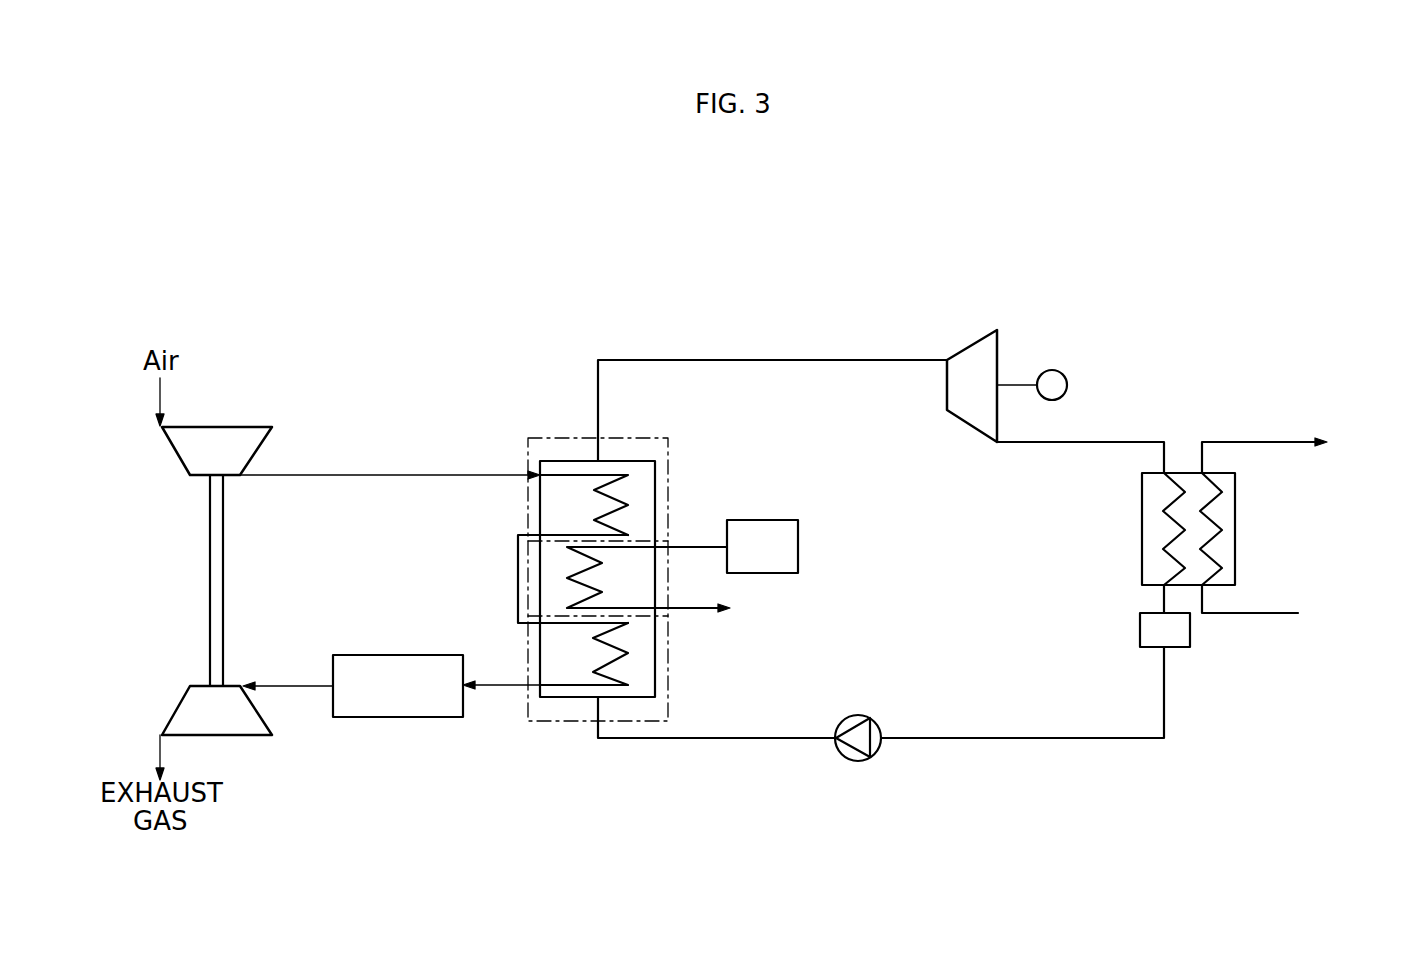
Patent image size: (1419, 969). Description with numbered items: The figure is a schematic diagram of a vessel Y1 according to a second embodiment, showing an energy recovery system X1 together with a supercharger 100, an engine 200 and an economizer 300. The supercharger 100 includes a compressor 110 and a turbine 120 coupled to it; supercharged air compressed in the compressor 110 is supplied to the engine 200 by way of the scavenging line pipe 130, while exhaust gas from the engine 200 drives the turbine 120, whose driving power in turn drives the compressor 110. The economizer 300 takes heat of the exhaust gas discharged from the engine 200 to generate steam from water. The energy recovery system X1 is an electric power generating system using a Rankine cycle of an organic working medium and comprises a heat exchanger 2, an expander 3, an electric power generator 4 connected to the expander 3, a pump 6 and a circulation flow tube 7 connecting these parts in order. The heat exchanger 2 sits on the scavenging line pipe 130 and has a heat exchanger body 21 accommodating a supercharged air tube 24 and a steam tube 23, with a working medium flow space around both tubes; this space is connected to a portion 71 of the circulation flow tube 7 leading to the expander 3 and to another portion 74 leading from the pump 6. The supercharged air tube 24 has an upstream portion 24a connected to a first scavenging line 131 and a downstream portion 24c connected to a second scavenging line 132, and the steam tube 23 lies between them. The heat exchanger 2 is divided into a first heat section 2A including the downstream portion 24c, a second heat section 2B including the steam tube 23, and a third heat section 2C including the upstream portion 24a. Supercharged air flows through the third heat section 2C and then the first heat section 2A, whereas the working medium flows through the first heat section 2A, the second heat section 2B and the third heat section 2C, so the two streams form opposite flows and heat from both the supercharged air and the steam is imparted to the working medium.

The supercharger 100 is at (186, 545).
The compressor 110 is at (222, 427).
The turbine 120 is at (178, 706).
The scavenging line pipe 130 is at (424, 453).
The first scavenging line 131 is at (355, 475).
The second scavenging line 132 is at (497, 690).
The heat exchanger 2 is at (591, 561).
The first heat section 2A is at (528, 650).
The second heat section 2B is at (518, 562).
The third heat section 2C is at (528, 500).
The heat exchanger body 21 is at (640, 461).
The steam tube 23 is at (597, 580).
The supercharged air tube 24 is at (640, 617).
The upstream portion 24a is at (613, 492).
The downstream portion 24c is at (618, 647).
The engine 200 is at (380, 655).
The economizer 300 is at (775, 520).
The expander 3 is at (963, 345).
The electric power generator 4 is at (1055, 370).
The pump 6 is at (856, 716).
The circulation flow tube 7 is at (1008, 514).
The portion of circulation flow tube 71 is at (777, 360).
The another portion of circulation flow tube 74 is at (790, 737).
The energy recovery system X1 is at (1179, 368).
The vessel Y1 is at (574, 291).